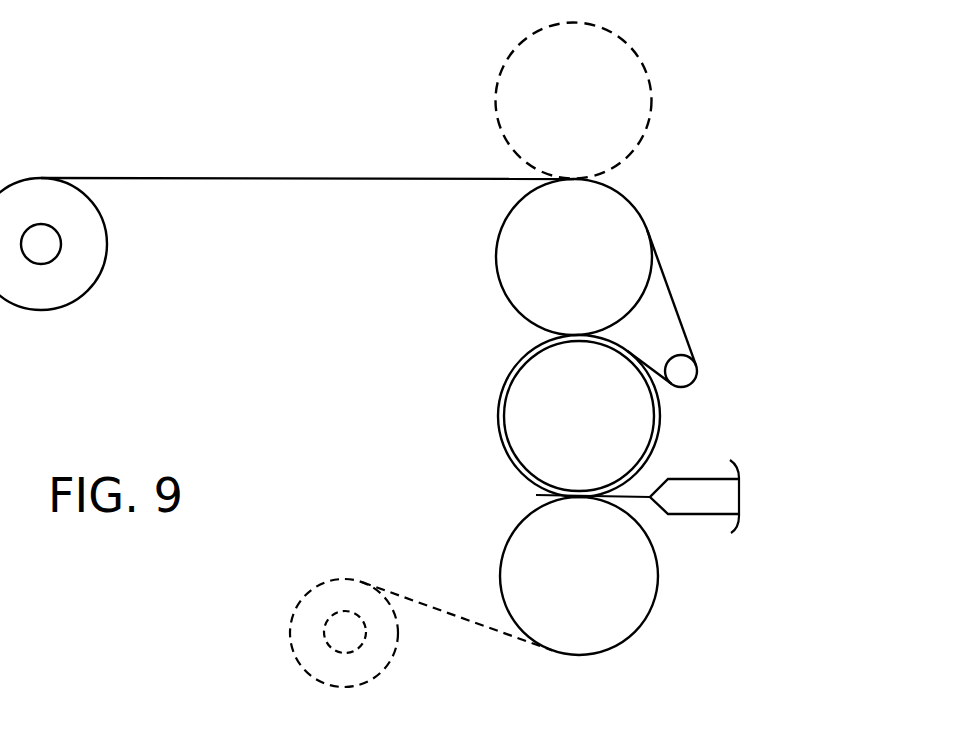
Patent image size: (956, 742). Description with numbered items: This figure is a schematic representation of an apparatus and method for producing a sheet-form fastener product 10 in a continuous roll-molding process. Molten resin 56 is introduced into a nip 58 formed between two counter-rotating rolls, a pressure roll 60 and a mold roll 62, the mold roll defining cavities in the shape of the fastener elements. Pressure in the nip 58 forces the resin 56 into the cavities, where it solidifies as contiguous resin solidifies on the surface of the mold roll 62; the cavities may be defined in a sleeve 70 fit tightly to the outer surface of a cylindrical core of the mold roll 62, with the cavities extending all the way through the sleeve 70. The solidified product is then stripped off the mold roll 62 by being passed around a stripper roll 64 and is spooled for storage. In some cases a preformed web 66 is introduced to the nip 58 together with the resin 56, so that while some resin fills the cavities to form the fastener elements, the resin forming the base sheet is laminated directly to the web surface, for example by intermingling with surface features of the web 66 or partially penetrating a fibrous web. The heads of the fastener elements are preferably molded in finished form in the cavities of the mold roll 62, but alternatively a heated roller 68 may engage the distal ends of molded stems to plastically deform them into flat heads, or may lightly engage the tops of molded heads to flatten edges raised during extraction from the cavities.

The fastener product 10 is at (240, 178).
The molten resin 56 is at (647, 493).
The nip 58 is at (526, 493).
The pressure roll 60 is at (559, 584).
The mold roll 62 is at (568, 434).
The stripper roll 64 is at (697, 375).
The preformed web 66 is at (445, 612).
The heated roller 68 is at (557, 110).
The sleeve 70 is at (505, 393).